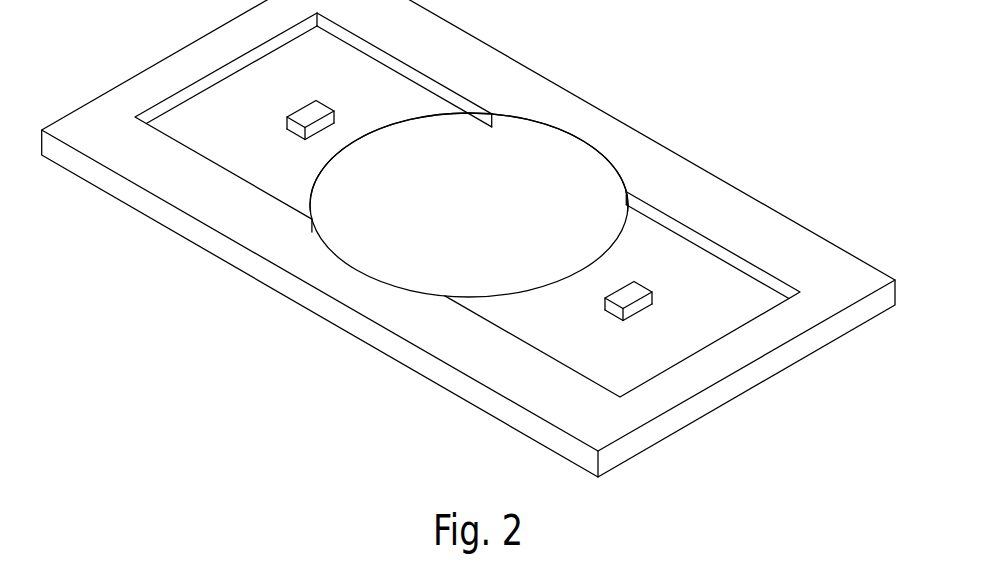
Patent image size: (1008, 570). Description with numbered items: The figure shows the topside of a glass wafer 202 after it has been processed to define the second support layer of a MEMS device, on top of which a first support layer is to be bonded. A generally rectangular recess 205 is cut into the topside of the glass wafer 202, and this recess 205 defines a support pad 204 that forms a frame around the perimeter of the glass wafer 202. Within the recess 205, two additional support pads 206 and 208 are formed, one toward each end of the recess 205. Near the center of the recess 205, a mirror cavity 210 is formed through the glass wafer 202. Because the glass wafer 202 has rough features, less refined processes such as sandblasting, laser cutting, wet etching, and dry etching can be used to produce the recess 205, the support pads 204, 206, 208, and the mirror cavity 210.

The glass wafer 202 is at (782, 352).
The support pad 204 is at (742, 230).
The rectangular recess 205 is at (731, 310).
The support pad 206 is at (303, 112).
The support pad 208 is at (623, 296).
The mirror cavity 210 is at (500, 225).